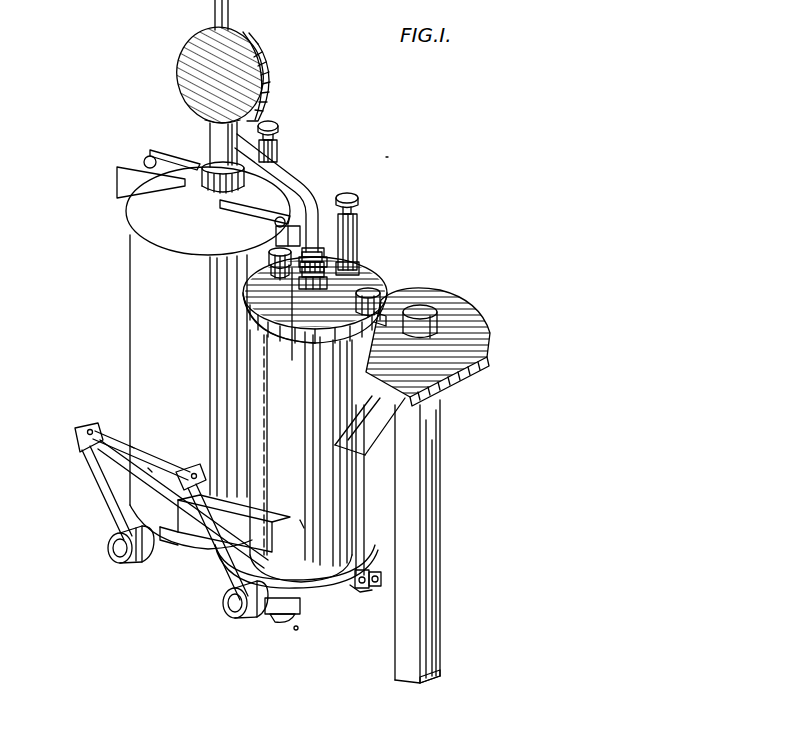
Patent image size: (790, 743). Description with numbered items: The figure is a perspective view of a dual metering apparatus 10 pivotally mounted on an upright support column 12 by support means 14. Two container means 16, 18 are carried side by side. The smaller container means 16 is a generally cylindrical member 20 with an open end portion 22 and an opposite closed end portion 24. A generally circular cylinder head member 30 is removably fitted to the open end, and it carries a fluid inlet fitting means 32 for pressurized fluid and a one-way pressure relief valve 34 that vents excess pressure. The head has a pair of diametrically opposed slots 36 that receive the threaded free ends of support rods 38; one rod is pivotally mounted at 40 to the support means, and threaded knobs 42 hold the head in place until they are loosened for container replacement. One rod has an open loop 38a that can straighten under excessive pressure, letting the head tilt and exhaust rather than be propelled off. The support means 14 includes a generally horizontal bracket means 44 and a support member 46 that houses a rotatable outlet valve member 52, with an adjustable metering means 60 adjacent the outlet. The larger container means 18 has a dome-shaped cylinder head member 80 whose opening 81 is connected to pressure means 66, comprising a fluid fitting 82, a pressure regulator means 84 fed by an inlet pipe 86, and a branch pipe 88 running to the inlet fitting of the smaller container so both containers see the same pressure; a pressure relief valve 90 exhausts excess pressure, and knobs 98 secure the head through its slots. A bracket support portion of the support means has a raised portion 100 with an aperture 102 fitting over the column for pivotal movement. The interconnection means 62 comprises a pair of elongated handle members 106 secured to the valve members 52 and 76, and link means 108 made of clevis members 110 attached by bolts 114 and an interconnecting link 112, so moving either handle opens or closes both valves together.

The metering apparatus 10 is at (388, 157).
The upright support column 12 is at (440, 632).
The support means 14 is at (460, 344).
The container means 16 is at (304, 528).
The container means 18 is at (133, 246).
The cylindrical member 20 is at (292, 425).
The open end portion 22 is at (286, 358).
The closed end portion 24 is at (288, 548).
The cylinder head member 30 is at (255, 282).
The fluid inlet fitting means 32 is at (335, 282).
The pressure relief valve 34 is at (352, 224).
The slots 36 is at (398, 292).
The support rods 38 is at (362, 518).
The open loop 38a is at (378, 580).
The pivotal mounting 40 is at (362, 590).
The threaded knobs 42 is at (392, 284).
The bracket means 44 is at (126, 472).
The support member 46 is at (283, 616).
The outlet valve member 52 is at (240, 620).
The adjustable metering means 60 is at (296, 630).
The interconnection means 62 is at (214, 558).
The pressure means 66 is at (268, 62).
The valve member 76 is at (118, 563).
The dome-shaped cylinder head member 80 is at (138, 207).
The opening 81 is at (218, 182).
The fluid fitting 82 is at (215, 138).
The pressure regulator means 84 is at (205, 121).
The inlet pipe 86 is at (228, 11).
The branch pipe 88 is at (292, 174).
The pressure relief valve 90 is at (277, 128).
The knobs 98 is at (150, 160).
The raised portion 100 is at (445, 392).
The aperture 102 is at (488, 358).
The handle members 106 is at (105, 502).
The link means 108 is at (132, 446).
The clevis members 110 is at (86, 432).
The interconnecting link 112 is at (150, 470).
The bolt 114 is at (268, 466).